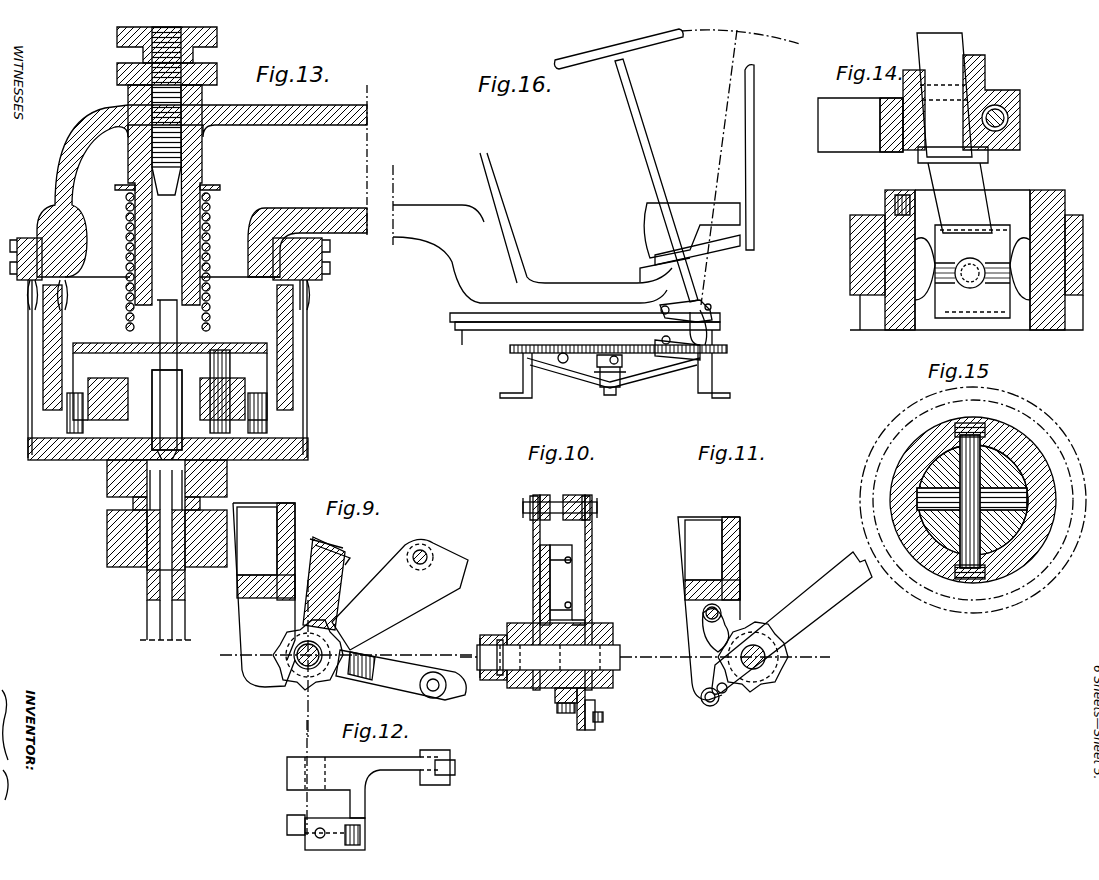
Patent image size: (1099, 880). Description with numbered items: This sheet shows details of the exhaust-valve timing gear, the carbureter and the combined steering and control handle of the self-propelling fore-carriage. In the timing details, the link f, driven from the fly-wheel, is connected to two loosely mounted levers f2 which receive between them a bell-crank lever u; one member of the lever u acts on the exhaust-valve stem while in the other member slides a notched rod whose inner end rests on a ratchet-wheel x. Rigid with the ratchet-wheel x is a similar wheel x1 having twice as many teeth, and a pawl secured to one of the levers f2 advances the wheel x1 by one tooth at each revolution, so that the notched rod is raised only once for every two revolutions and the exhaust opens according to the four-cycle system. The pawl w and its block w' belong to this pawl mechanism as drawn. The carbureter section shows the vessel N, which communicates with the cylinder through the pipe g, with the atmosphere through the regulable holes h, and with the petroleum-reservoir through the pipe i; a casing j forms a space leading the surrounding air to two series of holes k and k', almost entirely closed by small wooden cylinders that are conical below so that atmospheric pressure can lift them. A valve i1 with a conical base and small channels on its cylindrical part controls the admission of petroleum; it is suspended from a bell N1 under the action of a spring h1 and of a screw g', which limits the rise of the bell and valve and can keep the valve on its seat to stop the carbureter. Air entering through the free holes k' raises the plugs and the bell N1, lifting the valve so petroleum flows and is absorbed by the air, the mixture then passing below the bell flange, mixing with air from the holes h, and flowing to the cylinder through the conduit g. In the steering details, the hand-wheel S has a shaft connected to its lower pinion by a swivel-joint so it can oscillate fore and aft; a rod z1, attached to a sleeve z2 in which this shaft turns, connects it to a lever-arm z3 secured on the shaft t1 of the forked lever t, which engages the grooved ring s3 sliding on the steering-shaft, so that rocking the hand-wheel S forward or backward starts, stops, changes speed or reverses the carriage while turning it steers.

In FIG. 13, the screw g' is at (151, 56).
In FIG. 13, the pipe g is at (202, 181).
In FIG. 13, the spring h1 is at (173, 258).
In FIG. 13, the holes h is at (43, 274).
In FIG. 13, the carbureter vessel N is at (59, 347).
In FIG. 13, the bell N1 is at (261, 347).
In FIG. 13, the casing j is at (155, 369).
In FIG. 13, the holes k is at (60, 415).
In FIG. 13, the holes k' is at (108, 407).
In FIG. 13, the valve i1 is at (165, 410).
In FIG. 13, the pipe i is at (160, 555).
In FIG. 16, the hand-wheel S is at (678, 167).
In FIG. 14, the hand-wheel S is at (954, 133).
In FIG. 16, the rod z1 is at (712, 307).
In FIG. 14, the rod z1 is at (860, 145).
In FIG. 14, the sleeve z2 is at (1010, 105).
In FIG. 16, the lever-arm z3 is at (705, 330).
In FIG. 16, the grooved ring s3 is at (608, 358).
In FIG. 16, the forked lever t is at (612, 387).
In FIG. 16, the shaft t1 is at (660, 358).
In FIG. 9, the pawl w is at (326, 583).
In FIG. 10, the pawl w is at (562, 585).
In FIG. 12, the pawl block w' is at (344, 832).
In FIG. 9, the levers f2 is at (400, 594).
In FIG. 10, the levers f2 is at (600, 585).
In FIG. 11, the levers f2 is at (792, 623).
In FIG. 9, the link f is at (426, 564).
In FIG. 10, the link f is at (568, 484).
In FIG. 9, the bell-crank lever u is at (401, 675).
In FIG. 12, the bell-crank lever u is at (371, 784).
In FIG. 10, the bell-crank lever u is at (548, 688).
In FIG. 9, the ratchet-wheel x is at (305, 688).
In FIG. 10, the ratchet-wheel x is at (565, 703).
In FIG. 10, the ratchet-wheel x1 is at (580, 720).
In FIG. 11, the ratchet-wheel x1 is at (773, 692).